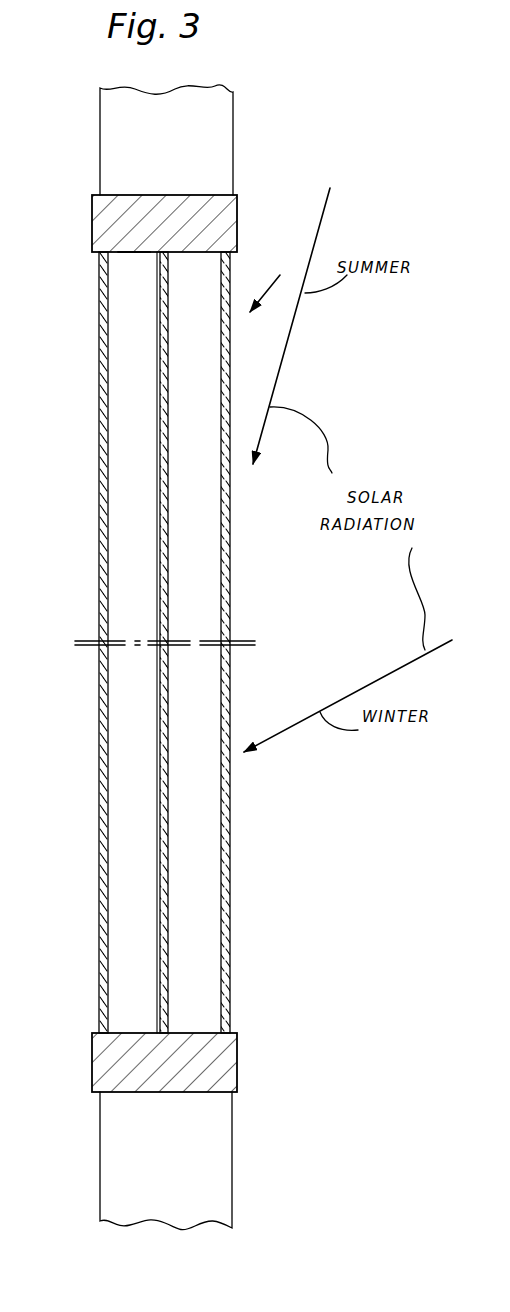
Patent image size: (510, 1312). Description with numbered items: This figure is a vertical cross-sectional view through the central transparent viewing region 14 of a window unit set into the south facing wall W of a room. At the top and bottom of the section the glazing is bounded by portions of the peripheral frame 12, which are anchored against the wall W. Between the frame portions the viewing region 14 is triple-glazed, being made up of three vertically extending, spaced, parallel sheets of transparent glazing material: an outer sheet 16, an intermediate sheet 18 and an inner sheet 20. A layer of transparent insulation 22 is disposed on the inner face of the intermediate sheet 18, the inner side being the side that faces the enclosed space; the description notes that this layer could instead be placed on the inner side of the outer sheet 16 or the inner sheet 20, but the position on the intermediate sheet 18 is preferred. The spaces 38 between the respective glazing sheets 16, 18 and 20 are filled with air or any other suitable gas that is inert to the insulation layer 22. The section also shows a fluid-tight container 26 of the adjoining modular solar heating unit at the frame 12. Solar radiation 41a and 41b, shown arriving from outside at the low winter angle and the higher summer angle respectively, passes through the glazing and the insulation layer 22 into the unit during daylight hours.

The south facing wall W is at (233, 131).
The peripheral frame 12 is at (237, 217).
The transparent viewing region 14 is at (255, 268).
The outer sheet 16 is at (230, 835).
The intermediate sheet 18 is at (167, 903).
The inner sheet 20 is at (100, 355).
The transparent insulation layer 22 is at (157, 938).
The fluid-tight container 26 is at (128, 246).
The space 38 is at (145, 518).
The solar radiation 41a is at (375, 680).
The solar radiation 41b is at (285, 348).